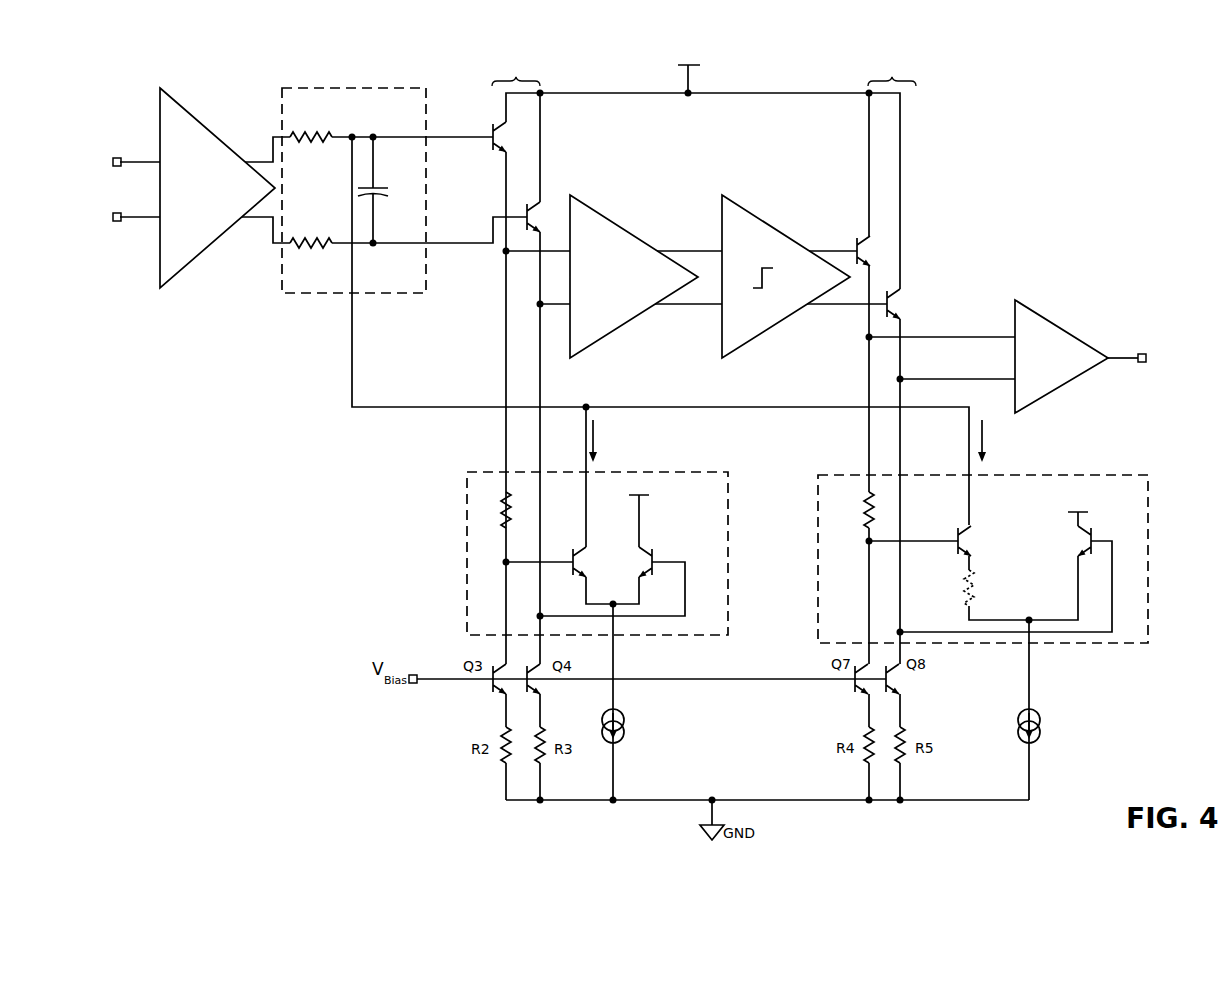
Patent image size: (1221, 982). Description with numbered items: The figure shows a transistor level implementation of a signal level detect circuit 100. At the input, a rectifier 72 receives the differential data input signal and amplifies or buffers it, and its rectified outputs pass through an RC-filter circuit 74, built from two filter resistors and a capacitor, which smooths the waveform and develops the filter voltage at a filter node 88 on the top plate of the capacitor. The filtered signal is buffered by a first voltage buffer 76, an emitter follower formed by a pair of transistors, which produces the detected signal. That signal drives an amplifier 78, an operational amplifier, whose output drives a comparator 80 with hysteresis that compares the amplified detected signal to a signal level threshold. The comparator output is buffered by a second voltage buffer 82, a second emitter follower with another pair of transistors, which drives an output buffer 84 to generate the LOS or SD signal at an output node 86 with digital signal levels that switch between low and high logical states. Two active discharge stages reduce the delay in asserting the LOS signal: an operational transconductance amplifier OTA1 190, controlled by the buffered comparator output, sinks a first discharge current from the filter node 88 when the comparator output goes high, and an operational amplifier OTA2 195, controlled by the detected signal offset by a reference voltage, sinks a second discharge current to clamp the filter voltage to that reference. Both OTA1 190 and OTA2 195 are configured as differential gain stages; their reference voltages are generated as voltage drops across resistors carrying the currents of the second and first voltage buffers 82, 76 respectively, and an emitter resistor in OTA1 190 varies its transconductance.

The rectifier 72 is at (216, 137).
The RC-filter circuit 74 is at (387, 87).
The first voltage buffer 76 is at (512, 350).
The amplifier 78 is at (636, 237).
The comparator 80 is at (786, 237).
The second voltage buffer 82 is at (892, 350).
The output buffer 84 is at (1060, 328).
The LOS or SD signal node 86 is at (1121, 354).
The filter node 88 is at (352, 333).
The signal level detect circuit 100 is at (1036, 66).
The operational transconductance amplifier OTA1 190 is at (1149, 553).
The operational amplifier OTA2 195 is at (492, 471).